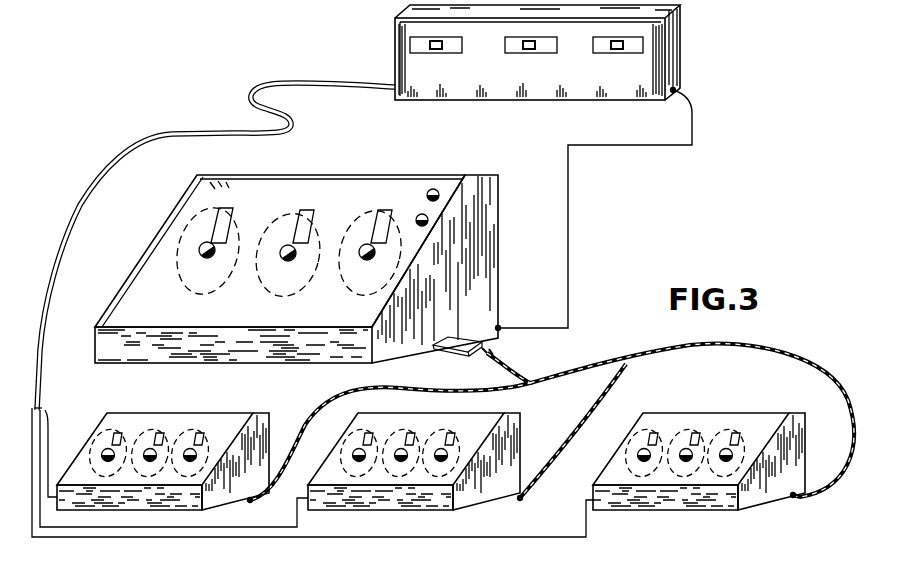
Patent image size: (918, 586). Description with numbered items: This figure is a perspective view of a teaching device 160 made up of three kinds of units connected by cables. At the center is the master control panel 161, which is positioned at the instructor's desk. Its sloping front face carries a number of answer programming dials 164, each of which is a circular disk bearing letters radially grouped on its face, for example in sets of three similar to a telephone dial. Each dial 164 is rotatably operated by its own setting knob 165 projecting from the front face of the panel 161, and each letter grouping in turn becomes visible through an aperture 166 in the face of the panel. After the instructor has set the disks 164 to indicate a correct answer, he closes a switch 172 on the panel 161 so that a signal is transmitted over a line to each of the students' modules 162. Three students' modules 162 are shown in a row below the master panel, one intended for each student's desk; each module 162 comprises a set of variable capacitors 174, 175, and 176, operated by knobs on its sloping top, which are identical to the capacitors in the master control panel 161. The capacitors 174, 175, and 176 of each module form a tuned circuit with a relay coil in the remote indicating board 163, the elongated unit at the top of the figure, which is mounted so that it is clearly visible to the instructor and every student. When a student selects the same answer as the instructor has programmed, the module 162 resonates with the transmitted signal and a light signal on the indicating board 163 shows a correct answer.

The teaching device 160 is at (674, 188).
The master control panel 161 is at (510, 211).
The students' module 162 is at (255, 409).
The remote indicating board 163 is at (391, 44).
The answer programming dial 164 is at (210, 282).
The setting knob 165 is at (199, 249).
The aperture 166 is at (210, 224).
The switch 172 is at (436, 189).
The variable capacitor 174 is at (96, 447).
The variable capacitor 175 is at (147, 433).
The variable capacitor 176 is at (187, 433).